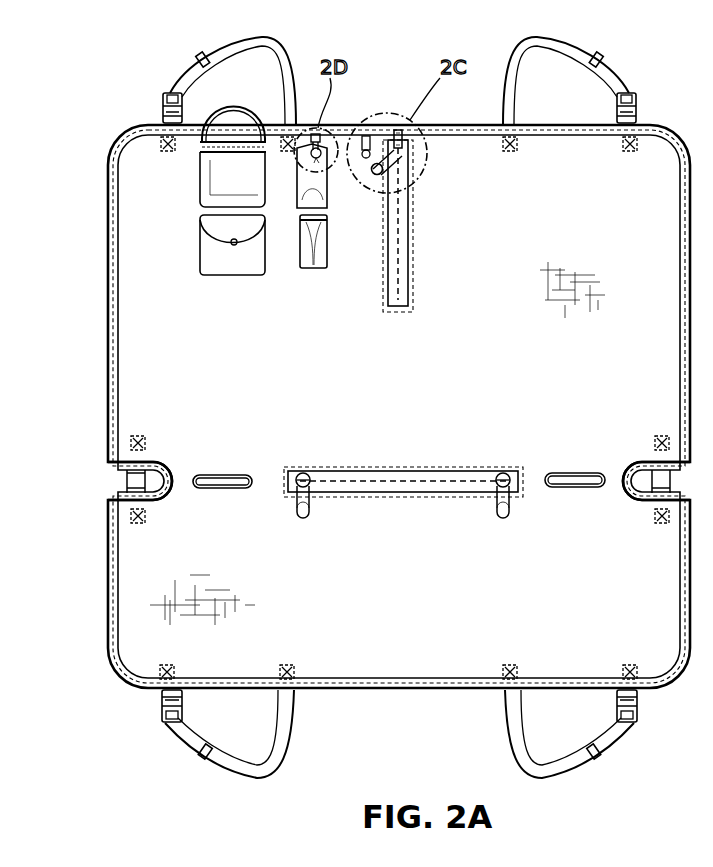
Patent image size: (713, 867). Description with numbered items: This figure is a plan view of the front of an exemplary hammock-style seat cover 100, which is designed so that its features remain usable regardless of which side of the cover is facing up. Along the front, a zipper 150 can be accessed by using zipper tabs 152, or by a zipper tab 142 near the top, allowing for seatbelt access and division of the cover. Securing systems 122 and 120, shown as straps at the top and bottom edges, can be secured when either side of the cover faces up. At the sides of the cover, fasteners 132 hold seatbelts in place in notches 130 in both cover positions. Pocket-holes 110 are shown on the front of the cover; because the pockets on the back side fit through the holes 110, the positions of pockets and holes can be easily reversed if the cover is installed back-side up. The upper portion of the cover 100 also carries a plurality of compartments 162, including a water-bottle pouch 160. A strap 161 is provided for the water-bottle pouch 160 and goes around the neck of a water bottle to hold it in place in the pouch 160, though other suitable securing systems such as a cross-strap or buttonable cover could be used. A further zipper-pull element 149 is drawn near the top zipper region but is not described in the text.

The seat cover 100 is at (670, 686).
The pocket-holes 110 is at (230, 488).
The securing system 120 is at (232, 768).
The securing system 122 is at (512, 70).
The notches 130 is at (160, 463).
The fasteners 132 is at (127, 482).
The zipper tab 142 is at (392, 152).
The zipper pull 149 is at (373, 172).
The zipper 150 is at (388, 482).
The zipper tabs 152 is at (503, 518).
The water-bottle pouch 160 is at (302, 182).
The strap 161 is at (320, 139).
The compartments 162 is at (234, 262).